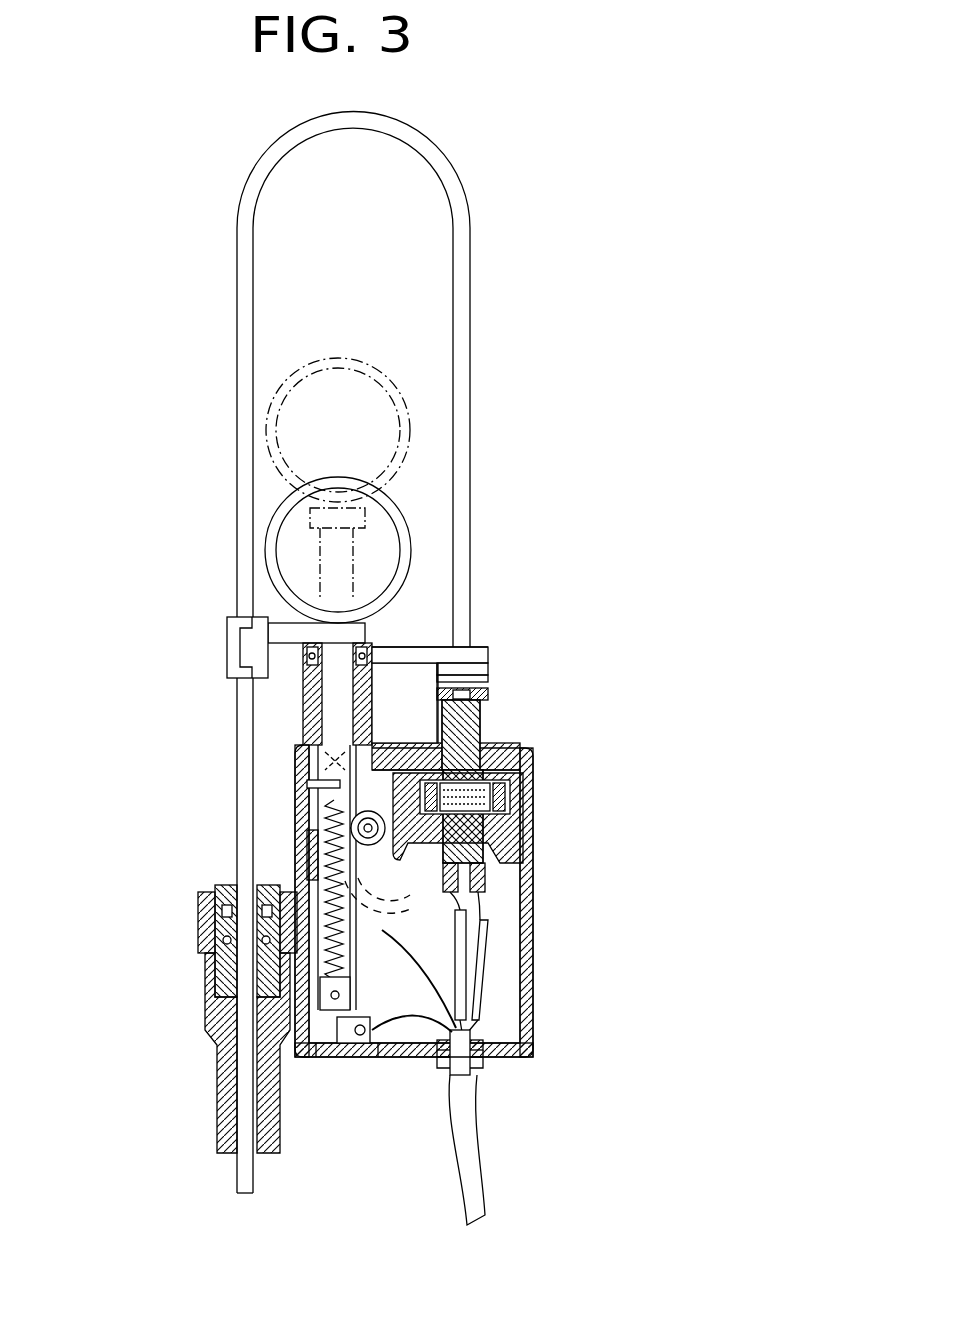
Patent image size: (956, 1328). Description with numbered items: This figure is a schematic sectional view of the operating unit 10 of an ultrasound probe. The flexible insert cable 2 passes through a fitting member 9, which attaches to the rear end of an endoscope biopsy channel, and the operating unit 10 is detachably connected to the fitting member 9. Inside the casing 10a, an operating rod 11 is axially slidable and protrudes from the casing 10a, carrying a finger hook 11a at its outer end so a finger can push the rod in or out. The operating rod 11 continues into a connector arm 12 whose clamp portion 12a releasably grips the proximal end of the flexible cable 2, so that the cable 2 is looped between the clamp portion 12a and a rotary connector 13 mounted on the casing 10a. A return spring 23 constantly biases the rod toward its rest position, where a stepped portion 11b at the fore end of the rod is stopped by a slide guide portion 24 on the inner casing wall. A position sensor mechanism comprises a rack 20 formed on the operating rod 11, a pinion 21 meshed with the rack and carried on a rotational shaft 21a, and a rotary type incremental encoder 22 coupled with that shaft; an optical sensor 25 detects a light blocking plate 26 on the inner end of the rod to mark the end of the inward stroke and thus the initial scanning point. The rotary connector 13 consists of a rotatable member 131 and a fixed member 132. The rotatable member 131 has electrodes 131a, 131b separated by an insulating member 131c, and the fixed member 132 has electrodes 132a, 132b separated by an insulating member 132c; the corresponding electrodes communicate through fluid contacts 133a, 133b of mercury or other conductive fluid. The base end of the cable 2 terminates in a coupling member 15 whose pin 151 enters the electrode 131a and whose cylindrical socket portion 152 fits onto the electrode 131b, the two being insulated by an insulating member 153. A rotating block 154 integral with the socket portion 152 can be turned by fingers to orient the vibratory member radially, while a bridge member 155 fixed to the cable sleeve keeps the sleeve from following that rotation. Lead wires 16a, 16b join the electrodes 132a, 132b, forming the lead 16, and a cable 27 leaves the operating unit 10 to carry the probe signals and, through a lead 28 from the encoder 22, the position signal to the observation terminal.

The flexible insert cable 2 is at (468, 240).
The fitting member 9 is at (220, 1085).
The operating unit 10 is at (534, 773).
The casing 10a is at (500, 1057).
The operating rod 11 is at (318, 690).
The finger hook 11a is at (272, 523).
The stepped portion 11b is at (320, 1000).
The connector arm 12 is at (285, 624).
The clamp portion 12a is at (227, 640).
The rotary connector 13 is at (503, 839).
The coupling member 15 is at (490, 691).
The lead 16 is at (475, 1190).
The lead wire 16a is at (495, 1040).
The lead wire 16b is at (470, 985).
The rack 20 is at (297, 968).
The pinion 21 is at (355, 820).
The rotational shaft 21a is at (305, 822).
The rotary type incremental encoder 22 is at (300, 743).
The return spring 23 is at (300, 852).
The slide guide portion 24 is at (300, 838).
The optical sensor 25 is at (344, 1053).
The light blocking plate 26 is at (320, 1053).
The cable 27 is at (378, 1053).
The lead 28 is at (440, 1053).
The rotatable member 131 is at (496, 757).
The electrode 131a is at (520, 793).
The electrode 131b is at (495, 718).
The insulating member 131c is at (437, 742).
The fixed member 132 is at (485, 895).
The electrode 132a is at (487, 887).
The electrode 132b is at (445, 890).
The insulating member 132c is at (482, 920).
The fluid contact 133a is at (535, 803).
The fluid contact 133b is at (535, 820).
The pin 151 is at (433, 680).
The cylindrical socket portion 152 is at (490, 697).
The insulating member 153 is at (490, 680).
The rotating block 154 is at (490, 662).
The bridge member 155 is at (475, 645).